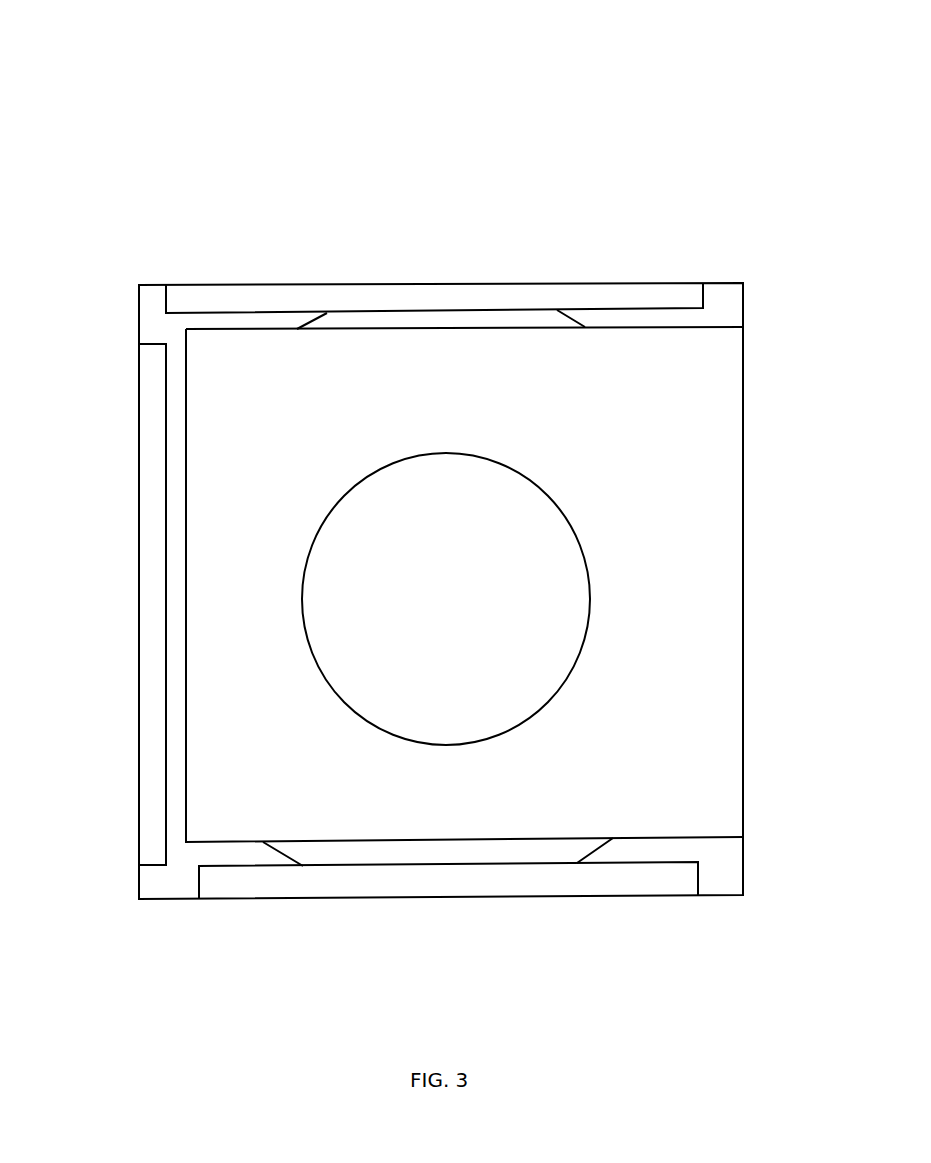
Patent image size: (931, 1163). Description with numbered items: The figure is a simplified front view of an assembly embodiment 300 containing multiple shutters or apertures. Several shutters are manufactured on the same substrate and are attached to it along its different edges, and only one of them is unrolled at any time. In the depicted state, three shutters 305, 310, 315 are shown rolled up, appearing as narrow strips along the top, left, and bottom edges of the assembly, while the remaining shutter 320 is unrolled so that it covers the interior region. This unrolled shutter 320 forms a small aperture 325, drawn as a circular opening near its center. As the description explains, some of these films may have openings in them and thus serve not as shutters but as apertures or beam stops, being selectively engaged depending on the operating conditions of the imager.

The assembly embodiment 300 is at (43, 40).
The shutter 305 is at (423, 298).
The shutter 310 is at (148, 573).
The shutter 315 is at (478, 875).
The shutter 320 is at (722, 548).
The small aperture 325 is at (503, 480).